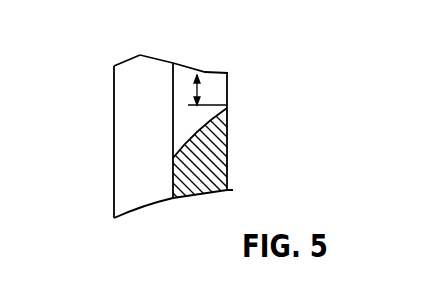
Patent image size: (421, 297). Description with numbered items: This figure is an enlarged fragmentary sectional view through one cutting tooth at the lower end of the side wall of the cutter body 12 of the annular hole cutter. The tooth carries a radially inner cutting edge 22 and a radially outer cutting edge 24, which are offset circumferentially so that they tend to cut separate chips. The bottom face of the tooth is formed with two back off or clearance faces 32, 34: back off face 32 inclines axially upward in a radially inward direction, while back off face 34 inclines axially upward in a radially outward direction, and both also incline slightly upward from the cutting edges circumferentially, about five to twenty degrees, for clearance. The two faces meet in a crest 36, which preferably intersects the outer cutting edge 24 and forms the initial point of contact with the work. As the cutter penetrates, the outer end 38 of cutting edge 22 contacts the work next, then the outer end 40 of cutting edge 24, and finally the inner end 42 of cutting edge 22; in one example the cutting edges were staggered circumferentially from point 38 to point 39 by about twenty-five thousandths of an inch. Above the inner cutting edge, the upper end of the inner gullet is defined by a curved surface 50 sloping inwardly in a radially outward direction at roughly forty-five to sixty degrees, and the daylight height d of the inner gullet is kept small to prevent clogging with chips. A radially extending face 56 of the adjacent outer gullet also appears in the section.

The cutter body 12 is at (197, 192).
The radially inner cutting edge 22 is at (205, 73).
The radially outer cutting edge 24 is at (128, 61).
The back off face 32 is at (200, 70).
The back off face 34 is at (127, 58).
The crest 36 is at (140, 55).
The outer end of cutting edge 22 38 is at (173, 63).
The point 39 is at (173, 63).
The outer end of cutting edge 24 40 is at (114, 66).
The inner end of cutting edge 22 42 is at (228, 73).
The curved surface 50 is at (228, 143).
The radially extending face 56 is at (122, 196).
The daylight height d is at (195, 90).